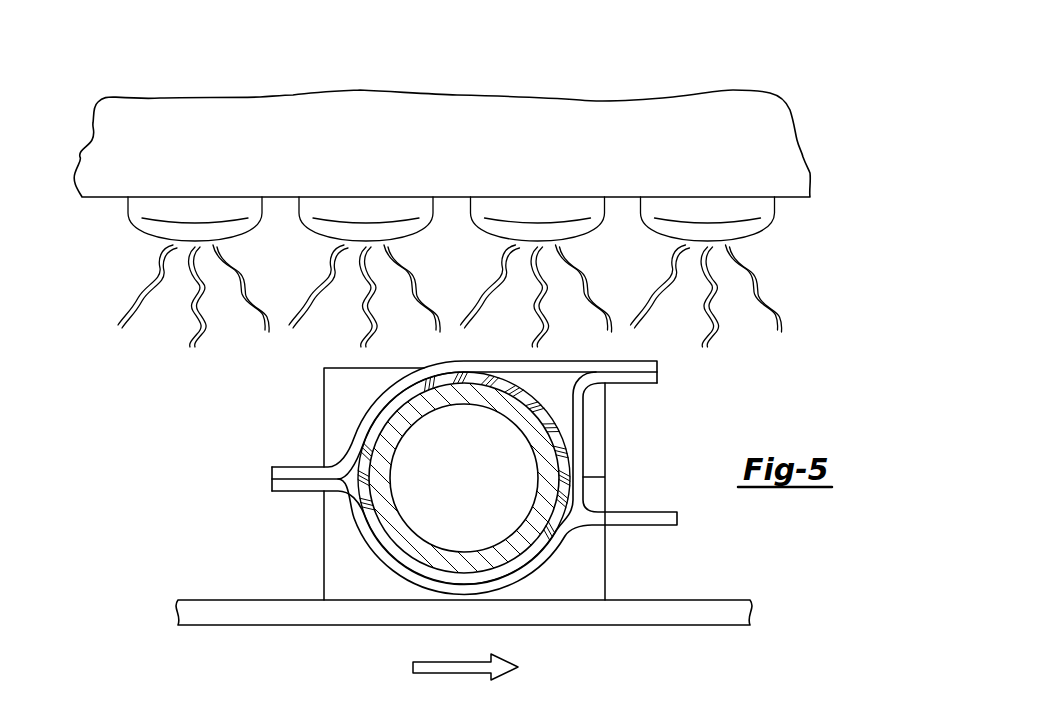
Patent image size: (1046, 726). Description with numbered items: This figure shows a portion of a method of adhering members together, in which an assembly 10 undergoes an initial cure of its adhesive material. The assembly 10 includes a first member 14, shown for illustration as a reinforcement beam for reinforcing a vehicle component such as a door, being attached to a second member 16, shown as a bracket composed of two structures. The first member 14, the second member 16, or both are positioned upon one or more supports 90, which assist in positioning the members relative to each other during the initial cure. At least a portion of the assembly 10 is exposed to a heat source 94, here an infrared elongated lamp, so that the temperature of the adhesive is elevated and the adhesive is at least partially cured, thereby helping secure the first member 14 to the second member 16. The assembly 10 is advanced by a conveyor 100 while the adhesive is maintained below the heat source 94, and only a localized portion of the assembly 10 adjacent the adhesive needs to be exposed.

The assembly 10 is at (464, 478).
The first member 14 is at (534, 533).
The second member 16 is at (383, 565).
The support 90 is at (585, 562).
The heat source 94 is at (513, 110).
The conveyor 100 is at (672, 625).